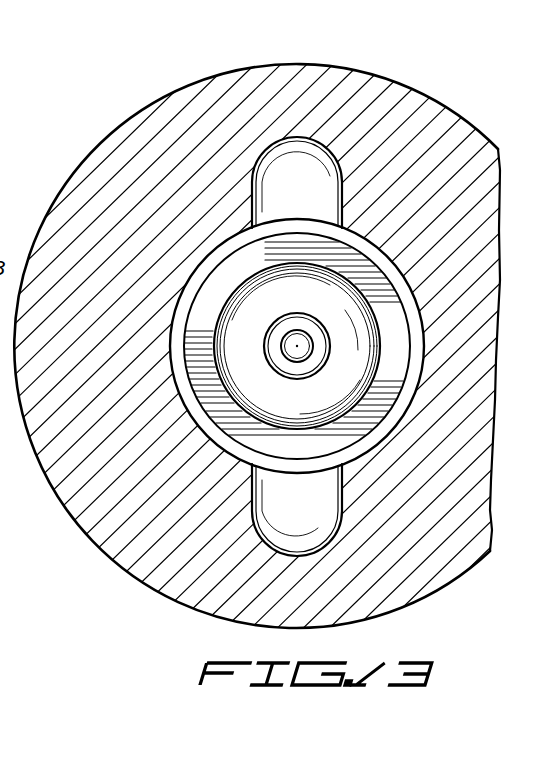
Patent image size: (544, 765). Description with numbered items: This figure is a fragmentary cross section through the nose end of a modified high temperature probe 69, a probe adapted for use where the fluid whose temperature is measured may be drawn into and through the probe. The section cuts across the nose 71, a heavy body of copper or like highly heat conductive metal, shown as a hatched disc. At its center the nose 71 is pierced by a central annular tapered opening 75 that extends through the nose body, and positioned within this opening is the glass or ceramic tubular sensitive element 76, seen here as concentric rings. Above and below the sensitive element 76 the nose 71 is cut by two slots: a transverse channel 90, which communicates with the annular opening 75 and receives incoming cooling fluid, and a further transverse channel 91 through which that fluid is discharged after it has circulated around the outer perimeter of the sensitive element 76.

The probe device 69 is at (460, 102).
The nose 71 is at (174, 606).
The central annular tapered opening 75 is at (218, 451).
The tubular sensitive element 76 is at (233, 280).
The transverse channel 90 is at (307, 160).
The further transverse channel 91 is at (318, 523).